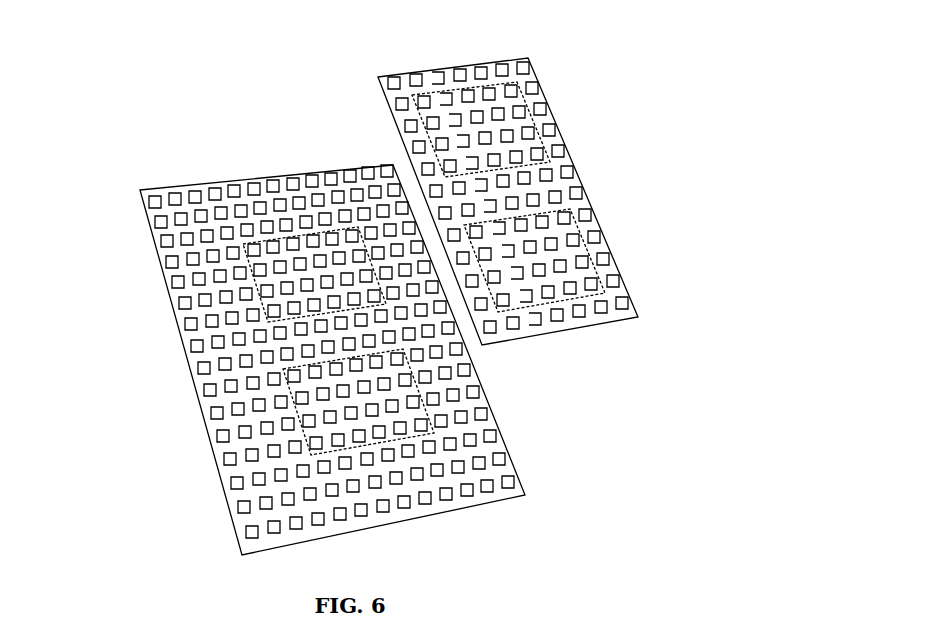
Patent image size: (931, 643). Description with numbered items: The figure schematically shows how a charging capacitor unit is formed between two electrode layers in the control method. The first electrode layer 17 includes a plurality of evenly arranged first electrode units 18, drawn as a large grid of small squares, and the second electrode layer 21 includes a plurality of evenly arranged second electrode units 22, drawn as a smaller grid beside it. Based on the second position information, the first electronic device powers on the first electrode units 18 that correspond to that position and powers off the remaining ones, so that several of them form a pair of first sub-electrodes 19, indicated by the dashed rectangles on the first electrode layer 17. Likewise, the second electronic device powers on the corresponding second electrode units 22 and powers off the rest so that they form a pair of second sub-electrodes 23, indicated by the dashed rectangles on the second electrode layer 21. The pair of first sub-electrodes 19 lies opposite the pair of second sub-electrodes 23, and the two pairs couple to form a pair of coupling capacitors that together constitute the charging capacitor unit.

The first electrode layer 17 is at (139, 189).
The first electrode units 18 is at (233, 184).
The first sub-electrodes 19 is at (240, 245).
The second electrode layer 21 is at (524, 66).
The second electrode units 22 is at (580, 319).
The second sub-electrodes 23 is at (538, 118).